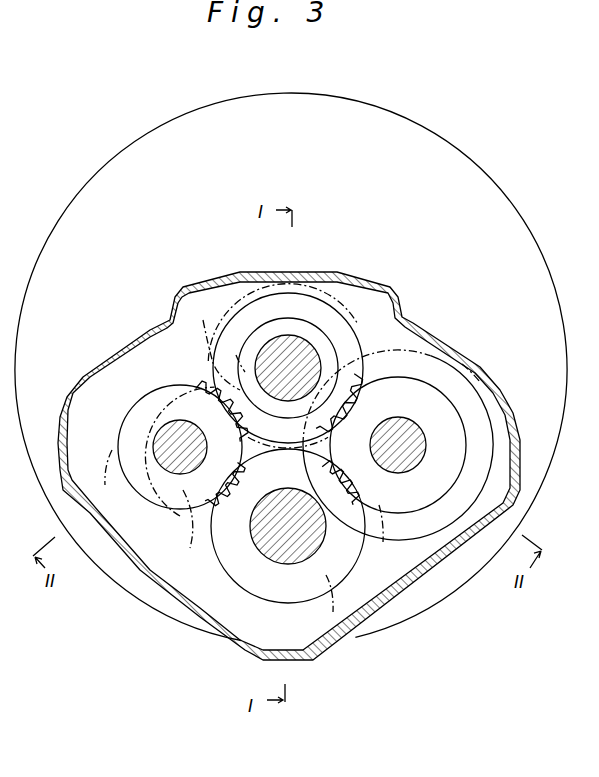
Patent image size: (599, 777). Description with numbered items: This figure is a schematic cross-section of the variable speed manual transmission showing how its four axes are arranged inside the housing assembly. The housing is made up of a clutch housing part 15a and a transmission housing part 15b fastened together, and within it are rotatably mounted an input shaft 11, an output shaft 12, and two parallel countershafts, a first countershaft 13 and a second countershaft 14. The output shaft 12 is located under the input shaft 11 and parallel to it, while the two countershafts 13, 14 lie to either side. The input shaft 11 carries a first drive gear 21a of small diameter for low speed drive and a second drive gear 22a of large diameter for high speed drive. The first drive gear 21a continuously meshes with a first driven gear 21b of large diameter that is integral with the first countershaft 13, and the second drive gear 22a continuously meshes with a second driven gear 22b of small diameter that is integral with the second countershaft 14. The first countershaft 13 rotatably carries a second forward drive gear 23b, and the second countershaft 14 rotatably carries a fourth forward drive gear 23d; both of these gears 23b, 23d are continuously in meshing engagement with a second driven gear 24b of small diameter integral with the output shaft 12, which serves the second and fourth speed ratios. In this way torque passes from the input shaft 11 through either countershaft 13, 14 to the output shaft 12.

The input shaft 11 is at (292, 342).
The output shaft 12 is at (286, 558).
The first countershaft 13 is at (420, 447).
The second countershaft 14 is at (173, 473).
The clutch housing part 15a is at (494, 182).
The transmission housing part 15b is at (400, 297).
The first drive gear 21a is at (240, 363).
The first driven gear 21b is at (478, 372).
The second drive gear 22a is at (227, 340).
The second driven gear 22b is at (187, 522).
The second forward drive gear 23b is at (380, 530).
The fourth forward drive gear 23d is at (104, 470).
The second driven gear 24b is at (328, 597).